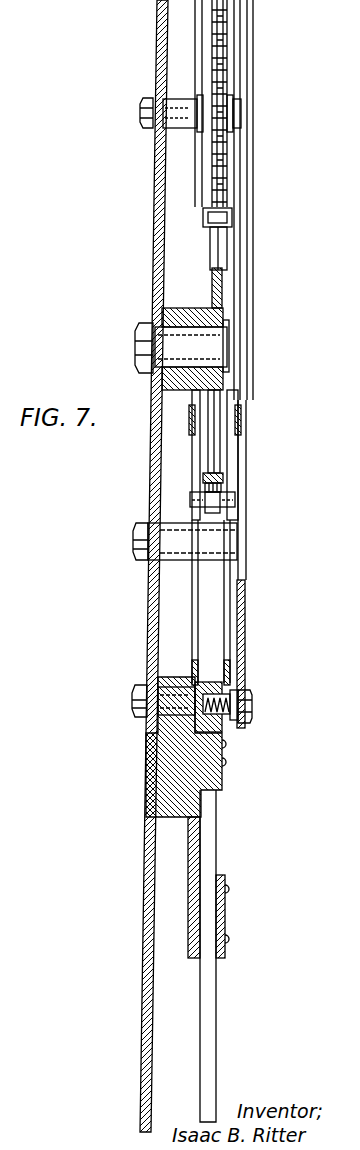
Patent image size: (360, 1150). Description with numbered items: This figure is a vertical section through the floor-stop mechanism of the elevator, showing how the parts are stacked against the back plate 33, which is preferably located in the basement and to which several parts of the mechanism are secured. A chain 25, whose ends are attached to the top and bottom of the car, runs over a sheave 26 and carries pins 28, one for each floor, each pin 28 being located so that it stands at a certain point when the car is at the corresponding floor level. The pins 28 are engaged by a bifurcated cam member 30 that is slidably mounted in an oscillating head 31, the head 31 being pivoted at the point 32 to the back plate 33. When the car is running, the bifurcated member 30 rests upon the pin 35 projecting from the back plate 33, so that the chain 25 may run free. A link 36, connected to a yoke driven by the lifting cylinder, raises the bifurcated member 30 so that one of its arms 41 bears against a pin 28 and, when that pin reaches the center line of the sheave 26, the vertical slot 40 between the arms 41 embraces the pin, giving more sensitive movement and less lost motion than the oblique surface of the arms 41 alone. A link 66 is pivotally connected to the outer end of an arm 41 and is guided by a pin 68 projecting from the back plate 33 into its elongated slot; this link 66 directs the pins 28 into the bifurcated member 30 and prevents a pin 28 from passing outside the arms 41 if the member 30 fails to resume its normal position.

The chain 25 is at (214, 56).
The sheave 26 is at (216, 250).
The pin 28 is at (194, 499).
The bifurcated cam member 30 is at (230, 604).
The oscillating head 31 is at (160, 791).
The pivot point 32 is at (132, 701).
The back plate 33 is at (156, 72).
The pin 35 is at (174, 548).
The link 36 is at (246, 343).
The slot 40 is at (224, 660).
The arm 41 is at (197, 455).
The link 66 is at (196, 181).
The pin 68 is at (180, 108).